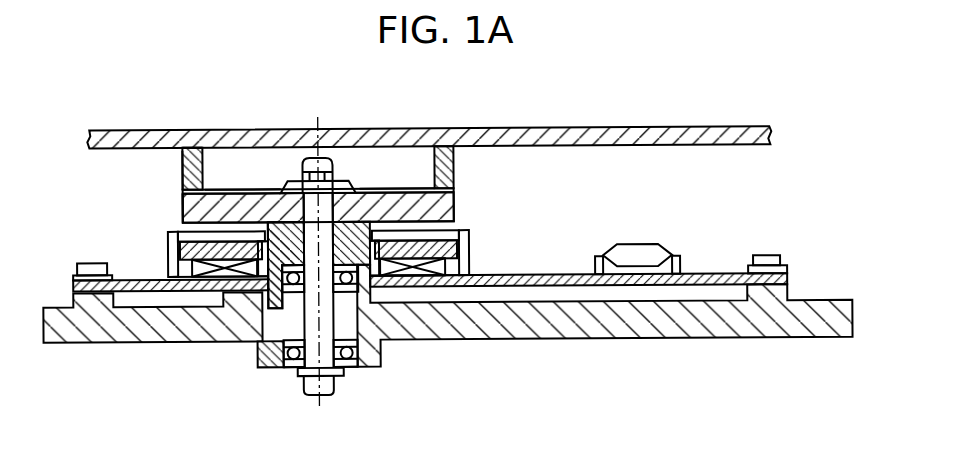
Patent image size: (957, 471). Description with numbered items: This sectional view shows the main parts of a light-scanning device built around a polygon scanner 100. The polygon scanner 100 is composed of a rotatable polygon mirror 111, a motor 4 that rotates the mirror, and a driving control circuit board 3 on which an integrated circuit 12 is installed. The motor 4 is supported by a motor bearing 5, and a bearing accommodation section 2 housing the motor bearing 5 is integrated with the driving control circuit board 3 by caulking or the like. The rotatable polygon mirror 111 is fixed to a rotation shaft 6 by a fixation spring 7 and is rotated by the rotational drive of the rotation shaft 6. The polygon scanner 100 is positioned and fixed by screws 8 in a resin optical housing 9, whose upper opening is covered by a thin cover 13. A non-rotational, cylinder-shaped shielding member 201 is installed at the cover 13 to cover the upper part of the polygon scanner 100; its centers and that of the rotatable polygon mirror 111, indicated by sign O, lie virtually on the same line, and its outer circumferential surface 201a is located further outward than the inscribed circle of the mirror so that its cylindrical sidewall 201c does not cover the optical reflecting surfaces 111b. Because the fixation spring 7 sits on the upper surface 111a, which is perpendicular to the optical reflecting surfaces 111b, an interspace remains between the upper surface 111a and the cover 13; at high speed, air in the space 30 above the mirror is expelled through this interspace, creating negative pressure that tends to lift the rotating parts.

The polygon scanner 100 is at (592, 177).
The cover 13 is at (503, 134).
The space 30 is at (378, 158).
The fixation spring 7 is at (343, 180).
The shielding member 201 is at (458, 165).
The outer circumferential surface 201a is at (169, 128).
The cylindrical sidewall 201c is at (183, 174).
The rotatable polygon mirror 111 is at (454, 208).
The upper surface 111a is at (243, 189).
The optical reflecting surfaces 111b is at (183, 203).
The motor 4 is at (152, 236).
The screws 8 is at (88, 262).
The integrated circuit 12 is at (647, 247).
The driving control circuit board 3 is at (547, 274).
The optical housing 9 is at (147, 338).
The bearing accommodation section 2 is at (393, 303).
The motor bearing 5 is at (284, 312).
The rotation shaft 6 is at (332, 384).
The center O is at (307, 418).